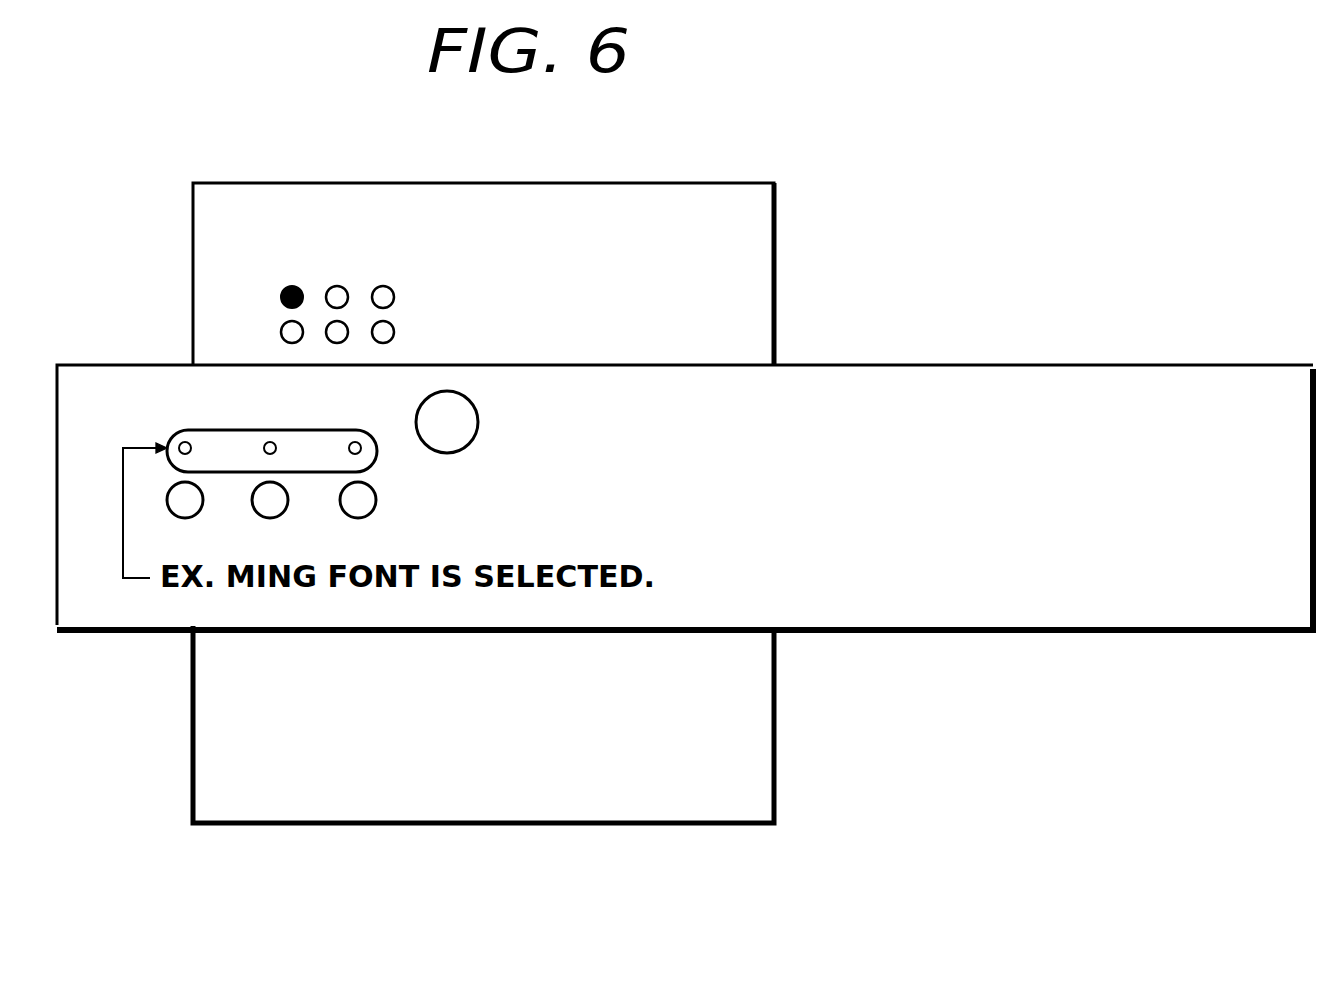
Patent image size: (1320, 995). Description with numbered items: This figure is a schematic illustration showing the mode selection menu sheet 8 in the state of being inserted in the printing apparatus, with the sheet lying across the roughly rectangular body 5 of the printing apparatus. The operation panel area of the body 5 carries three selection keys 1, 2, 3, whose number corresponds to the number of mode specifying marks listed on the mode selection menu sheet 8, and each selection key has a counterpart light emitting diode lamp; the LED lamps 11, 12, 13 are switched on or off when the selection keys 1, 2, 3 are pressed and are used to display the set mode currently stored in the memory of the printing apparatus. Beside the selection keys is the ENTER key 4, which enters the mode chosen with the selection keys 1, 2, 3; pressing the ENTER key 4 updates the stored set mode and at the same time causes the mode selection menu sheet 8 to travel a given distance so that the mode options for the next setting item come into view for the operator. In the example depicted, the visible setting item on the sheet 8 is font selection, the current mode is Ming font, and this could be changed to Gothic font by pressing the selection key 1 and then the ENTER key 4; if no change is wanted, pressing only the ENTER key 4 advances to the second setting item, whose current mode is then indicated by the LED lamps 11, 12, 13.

The selection key 1 is at (180, 506).
The selection key 2 is at (272, 510).
The selection key 3 is at (365, 505).
The ENTER key 4 is at (463, 421).
The body 5 is at (1070, 385).
The mode selection menu sheet 8 is at (677, 197).
The LED lamp 11 is at (185, 442).
The LED lamp 12 is at (270, 442).
The LED lamp 13 is at (352, 442).